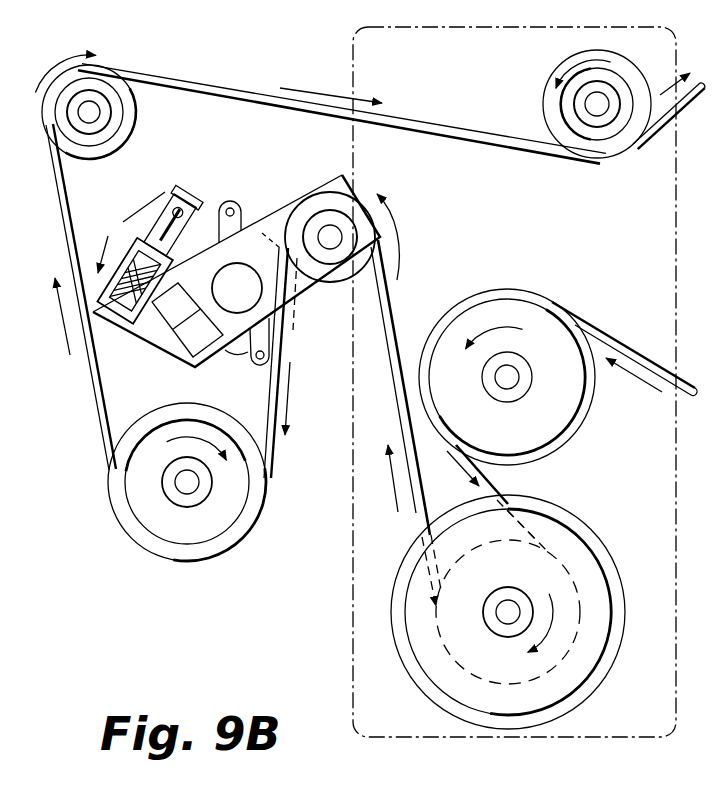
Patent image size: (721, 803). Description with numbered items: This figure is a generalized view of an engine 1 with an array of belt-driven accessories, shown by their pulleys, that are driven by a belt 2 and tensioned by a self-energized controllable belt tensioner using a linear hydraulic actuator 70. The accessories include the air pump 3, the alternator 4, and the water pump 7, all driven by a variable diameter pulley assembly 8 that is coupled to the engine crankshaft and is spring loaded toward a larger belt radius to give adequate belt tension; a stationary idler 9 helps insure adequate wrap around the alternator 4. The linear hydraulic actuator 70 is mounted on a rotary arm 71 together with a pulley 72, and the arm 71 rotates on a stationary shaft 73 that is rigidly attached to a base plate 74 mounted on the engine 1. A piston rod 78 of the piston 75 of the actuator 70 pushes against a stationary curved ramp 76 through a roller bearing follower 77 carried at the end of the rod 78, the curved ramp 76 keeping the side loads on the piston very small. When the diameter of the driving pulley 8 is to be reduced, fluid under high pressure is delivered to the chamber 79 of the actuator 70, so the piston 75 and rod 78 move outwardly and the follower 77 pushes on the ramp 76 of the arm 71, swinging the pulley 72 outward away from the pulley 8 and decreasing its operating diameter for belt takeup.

The engine 1 is at (678, 326).
The belt 2 is at (483, 142).
The air pump 3 is at (250, 512).
The alternator 4 is at (129, 112).
The water pump 7 is at (587, 394).
The variable diameter pulley assembly 8 is at (594, 549).
The stationary idler 9 is at (551, 102).
The linear hydraulic actuator 70 is at (160, 259).
The rotary arm 71 is at (185, 364).
The pulley 72 is at (313, 206).
The stationary shaft 73 is at (238, 280).
The base plate 74 is at (242, 226).
The piston 75 is at (134, 281).
The stationary curved ramp 76 is at (170, 225).
The roller bearing follower 77 is at (187, 197).
The piston rod 78 is at (170, 225).
The chamber 79 is at (135, 281).